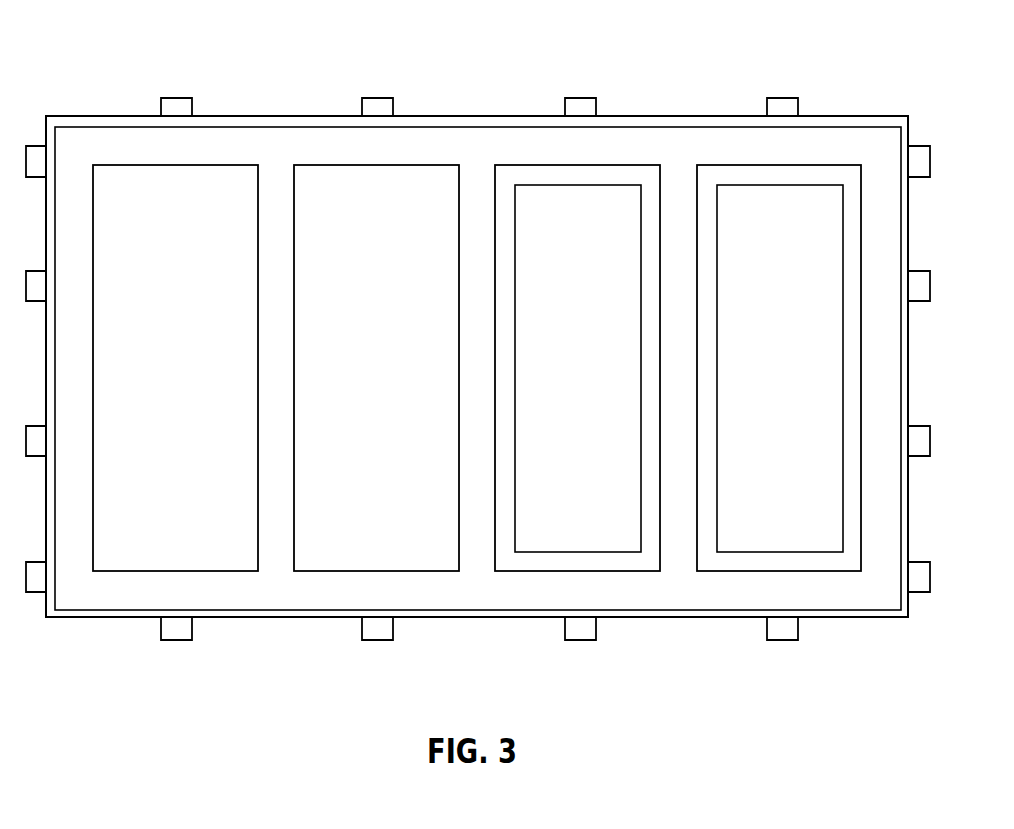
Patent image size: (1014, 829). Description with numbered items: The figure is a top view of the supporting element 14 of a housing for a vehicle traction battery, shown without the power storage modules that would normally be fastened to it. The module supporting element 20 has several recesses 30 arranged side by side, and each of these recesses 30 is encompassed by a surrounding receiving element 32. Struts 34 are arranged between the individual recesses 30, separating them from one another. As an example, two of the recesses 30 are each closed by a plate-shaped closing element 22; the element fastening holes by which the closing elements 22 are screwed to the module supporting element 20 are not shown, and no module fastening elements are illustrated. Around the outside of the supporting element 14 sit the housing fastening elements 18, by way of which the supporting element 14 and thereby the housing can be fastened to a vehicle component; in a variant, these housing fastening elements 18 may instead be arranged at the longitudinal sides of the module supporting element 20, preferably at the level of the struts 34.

The supporting element 14 is at (673, 84).
The housing fastening element 18 is at (378, 106).
The module supporting element 20 is at (417, 592).
The plate-shaped closing element 22 is at (213, 558).
The recess 30 is at (746, 486).
The receiving element 32 is at (842, 372).
The strut 34 is at (273, 182).